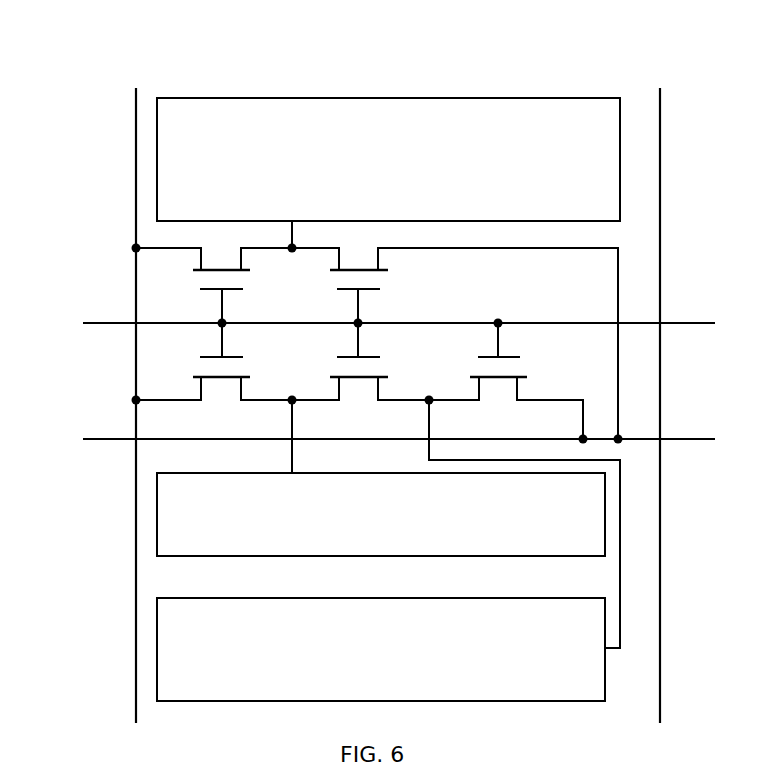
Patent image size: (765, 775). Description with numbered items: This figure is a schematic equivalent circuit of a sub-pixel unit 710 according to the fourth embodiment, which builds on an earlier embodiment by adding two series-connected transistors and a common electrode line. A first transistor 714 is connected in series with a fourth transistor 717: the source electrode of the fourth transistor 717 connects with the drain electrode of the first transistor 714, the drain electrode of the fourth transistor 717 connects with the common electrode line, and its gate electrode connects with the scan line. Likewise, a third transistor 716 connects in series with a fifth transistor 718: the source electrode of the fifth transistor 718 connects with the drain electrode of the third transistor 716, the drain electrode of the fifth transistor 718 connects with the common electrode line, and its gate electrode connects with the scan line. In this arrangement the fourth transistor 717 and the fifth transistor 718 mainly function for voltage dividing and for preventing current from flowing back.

The sub-pixel unit 710 is at (407, 26).
The first transistor 714 is at (152, 296).
The third transistor 716 is at (392, 306).
The fourth transistor 717 is at (363, 232).
The fifth transistor 718 is at (502, 300).